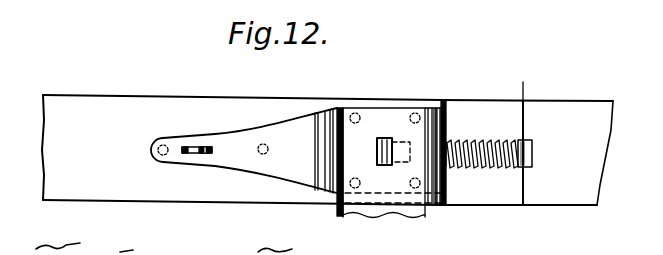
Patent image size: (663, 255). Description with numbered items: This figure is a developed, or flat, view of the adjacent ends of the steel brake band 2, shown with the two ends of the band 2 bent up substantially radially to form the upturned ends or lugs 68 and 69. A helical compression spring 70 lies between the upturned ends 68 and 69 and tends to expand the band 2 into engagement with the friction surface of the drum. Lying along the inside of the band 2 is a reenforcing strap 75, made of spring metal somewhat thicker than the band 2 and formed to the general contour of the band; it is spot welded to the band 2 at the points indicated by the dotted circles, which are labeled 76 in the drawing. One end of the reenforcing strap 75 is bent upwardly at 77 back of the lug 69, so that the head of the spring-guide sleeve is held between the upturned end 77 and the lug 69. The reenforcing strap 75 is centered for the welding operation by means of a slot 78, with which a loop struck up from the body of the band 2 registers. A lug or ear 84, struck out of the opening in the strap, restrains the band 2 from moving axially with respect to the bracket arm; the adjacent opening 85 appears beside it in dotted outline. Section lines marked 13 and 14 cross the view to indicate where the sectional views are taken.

The band 2 is at (53, 144).
The section line 13- 13 is at (211, 67).
The section line 14- 14 is at (407, 61).
The upturned end 68 is at (530, 84).
The upturned end 69 is at (445, 103).
The helical compression spring 70 is at (478, 141).
The reenforcing strap 75 is at (312, 160).
The rivets 76 is at (164, 143).
The upturned end 77 is at (434, 108).
The slot 78 is at (188, 155).
The lug or ear 84 is at (384, 160).
The slot 85 is at (380, 138).